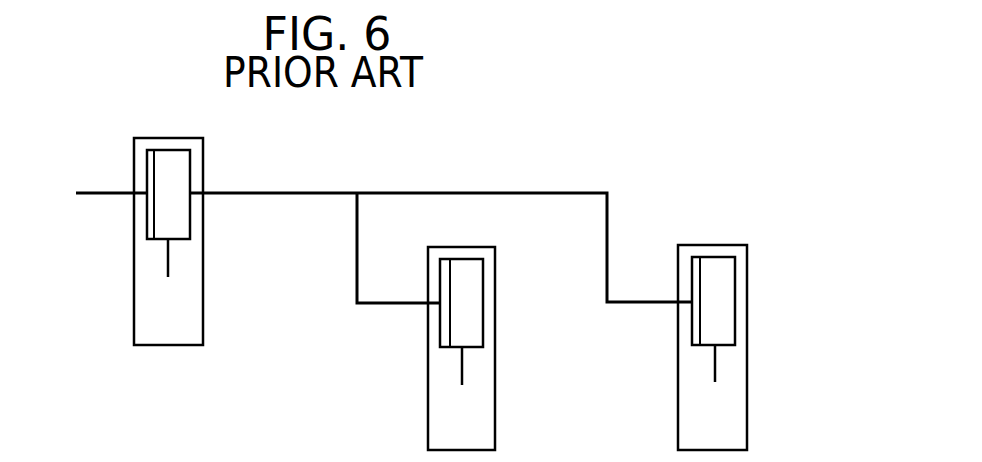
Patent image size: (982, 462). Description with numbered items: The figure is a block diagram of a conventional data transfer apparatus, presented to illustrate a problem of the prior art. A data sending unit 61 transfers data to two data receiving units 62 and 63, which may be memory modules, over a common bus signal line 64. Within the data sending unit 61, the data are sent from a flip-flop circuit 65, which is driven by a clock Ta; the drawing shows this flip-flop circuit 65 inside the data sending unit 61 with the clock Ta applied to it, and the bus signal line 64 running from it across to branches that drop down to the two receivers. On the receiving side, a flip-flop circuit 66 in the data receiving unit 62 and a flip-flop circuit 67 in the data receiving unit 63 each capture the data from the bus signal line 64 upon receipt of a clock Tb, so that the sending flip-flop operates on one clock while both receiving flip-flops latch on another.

The data sending unit 61 is at (201, 180).
The data receiving unit 62 is at (497, 370).
The data receiving unit 63 is at (747, 338).
The bus signal line 64 is at (418, 191).
The flip-flop circuit 65 is at (148, 223).
The flip-flop circuit 66 is at (440, 320).
The flip-flop circuit 67 is at (692, 325).